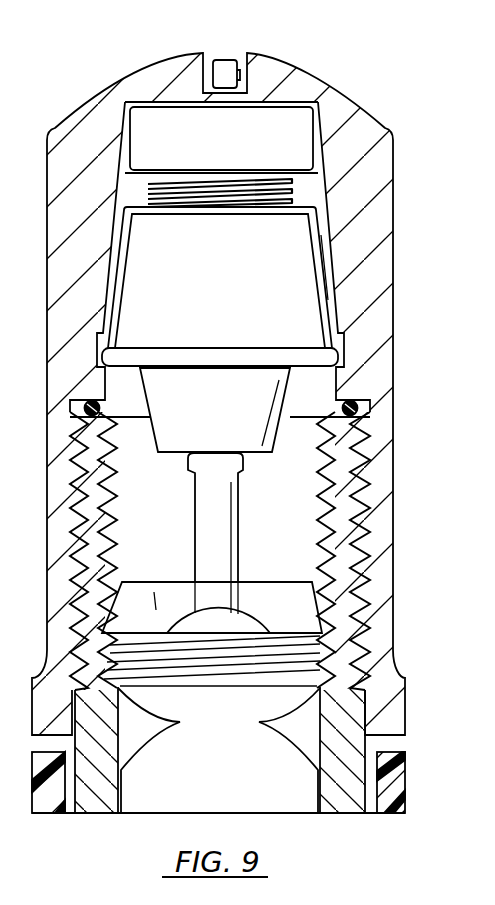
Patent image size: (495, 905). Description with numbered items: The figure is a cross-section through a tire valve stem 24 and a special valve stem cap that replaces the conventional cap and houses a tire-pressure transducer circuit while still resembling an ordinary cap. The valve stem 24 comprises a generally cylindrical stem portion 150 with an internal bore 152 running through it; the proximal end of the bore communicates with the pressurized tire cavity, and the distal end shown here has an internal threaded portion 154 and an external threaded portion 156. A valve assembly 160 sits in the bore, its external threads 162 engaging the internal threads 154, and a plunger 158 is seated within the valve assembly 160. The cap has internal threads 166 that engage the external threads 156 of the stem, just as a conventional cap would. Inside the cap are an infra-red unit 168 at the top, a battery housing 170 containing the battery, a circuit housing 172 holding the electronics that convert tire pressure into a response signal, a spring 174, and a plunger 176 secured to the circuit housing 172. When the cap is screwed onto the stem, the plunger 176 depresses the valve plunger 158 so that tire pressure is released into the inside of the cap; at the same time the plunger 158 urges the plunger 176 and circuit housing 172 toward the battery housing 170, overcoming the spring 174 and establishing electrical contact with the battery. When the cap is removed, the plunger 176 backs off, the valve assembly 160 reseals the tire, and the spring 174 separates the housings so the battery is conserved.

The valve stem 24 is at (396, 305).
The cylindrical stem portion 150 is at (362, 786).
The internal bore 152 is at (181, 502).
The internal threaded portion 154 is at (335, 532).
The external threaded portion 156 is at (380, 500).
The plunger 158 is at (200, 543).
The valve assembly 160 is at (325, 720).
The external threads 162 is at (322, 638).
The internal threads 166 is at (360, 440).
The infra-red unit 168 is at (229, 60).
The battery housing 170 is at (300, 122).
The housing 172 is at (315, 245).
The spring 174 is at (290, 188).
The plunger 176 is at (290, 386).